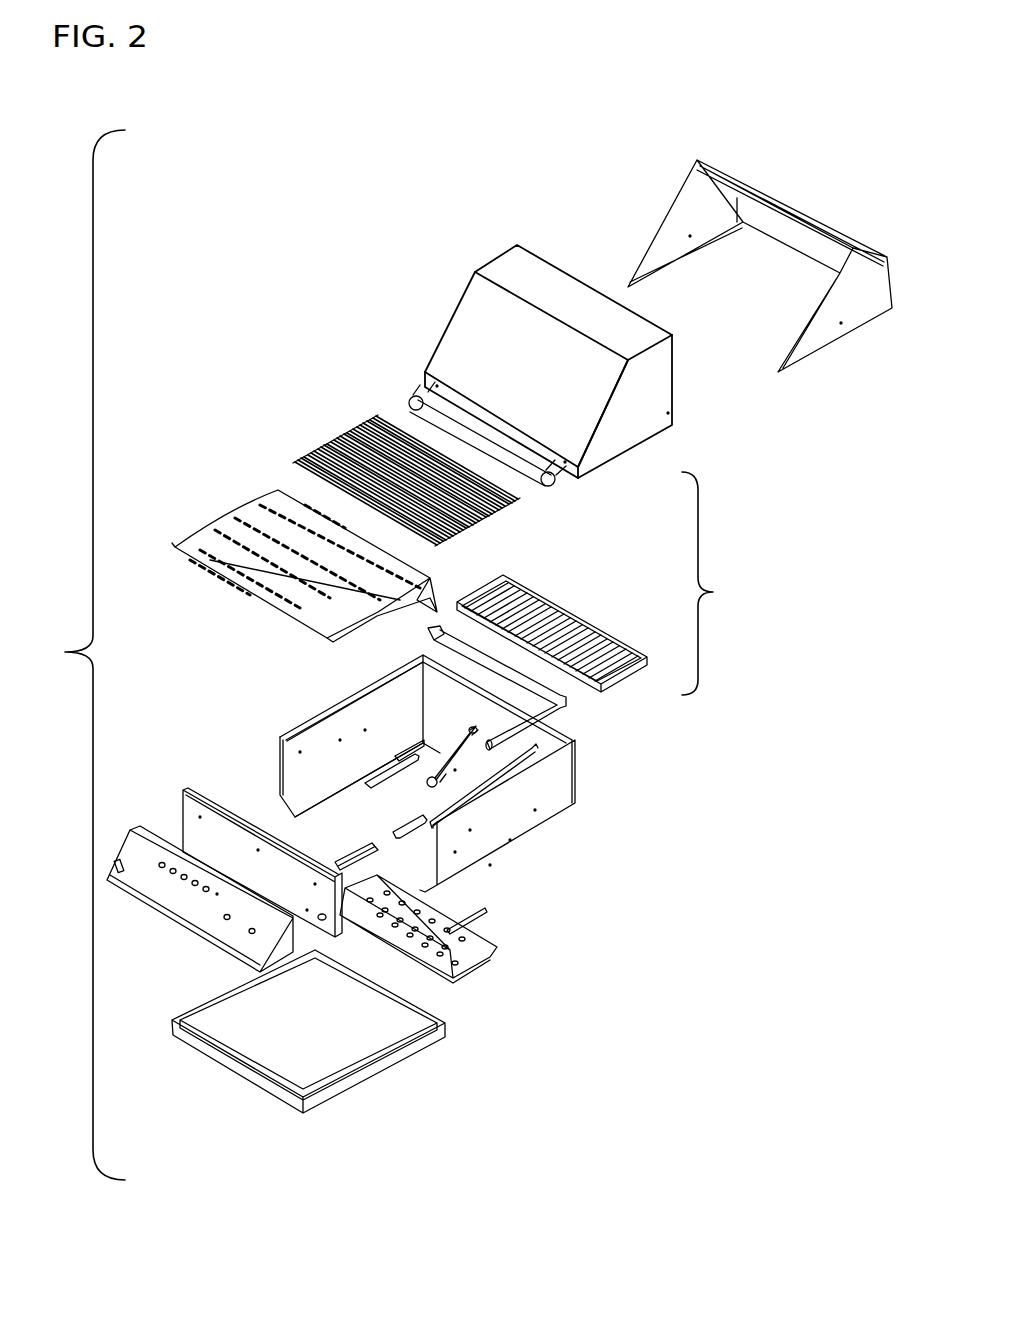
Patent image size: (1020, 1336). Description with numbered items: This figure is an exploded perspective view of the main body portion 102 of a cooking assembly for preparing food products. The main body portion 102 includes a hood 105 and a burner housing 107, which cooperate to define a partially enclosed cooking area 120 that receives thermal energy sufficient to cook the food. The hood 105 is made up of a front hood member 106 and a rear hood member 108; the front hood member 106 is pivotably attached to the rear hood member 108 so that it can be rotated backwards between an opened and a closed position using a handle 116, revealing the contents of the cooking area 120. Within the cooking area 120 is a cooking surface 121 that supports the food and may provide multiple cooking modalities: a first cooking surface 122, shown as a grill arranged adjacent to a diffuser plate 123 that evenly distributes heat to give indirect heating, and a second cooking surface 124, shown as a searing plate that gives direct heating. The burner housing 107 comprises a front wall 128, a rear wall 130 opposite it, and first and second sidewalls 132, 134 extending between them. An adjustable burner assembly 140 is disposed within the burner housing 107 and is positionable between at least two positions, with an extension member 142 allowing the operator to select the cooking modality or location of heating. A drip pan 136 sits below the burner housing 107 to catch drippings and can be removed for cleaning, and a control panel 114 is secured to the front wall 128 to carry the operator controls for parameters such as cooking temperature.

The main body portion 102 is at (65, 652).
The hood 105 is at (569, 166).
The front hood member 106 is at (460, 337).
The burner housing 107 is at (608, 792).
The rear hood member 108 is at (862, 268).
The control panel 114 is at (158, 887).
The handle 116 is at (418, 415).
The cooking area 120 is at (710, 382).
The cooking surface 121 is at (713, 592).
The first cooking surface 122 is at (497, 510).
The diffuser plate 123 is at (232, 528).
The second cooking surface 124 is at (572, 608).
The front wall 128 is at (197, 828).
The rear wall 130 is at (442, 708).
The first sidewall 132 is at (295, 762).
The second sidewall 134 is at (505, 823).
The drip pan 136 is at (338, 1058).
The adjustable burner assembly 140 is at (592, 714).
The extension member 142 is at (400, 827).